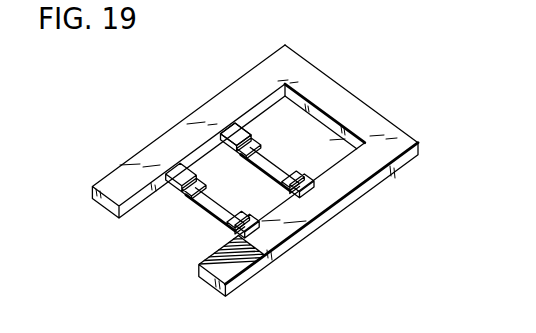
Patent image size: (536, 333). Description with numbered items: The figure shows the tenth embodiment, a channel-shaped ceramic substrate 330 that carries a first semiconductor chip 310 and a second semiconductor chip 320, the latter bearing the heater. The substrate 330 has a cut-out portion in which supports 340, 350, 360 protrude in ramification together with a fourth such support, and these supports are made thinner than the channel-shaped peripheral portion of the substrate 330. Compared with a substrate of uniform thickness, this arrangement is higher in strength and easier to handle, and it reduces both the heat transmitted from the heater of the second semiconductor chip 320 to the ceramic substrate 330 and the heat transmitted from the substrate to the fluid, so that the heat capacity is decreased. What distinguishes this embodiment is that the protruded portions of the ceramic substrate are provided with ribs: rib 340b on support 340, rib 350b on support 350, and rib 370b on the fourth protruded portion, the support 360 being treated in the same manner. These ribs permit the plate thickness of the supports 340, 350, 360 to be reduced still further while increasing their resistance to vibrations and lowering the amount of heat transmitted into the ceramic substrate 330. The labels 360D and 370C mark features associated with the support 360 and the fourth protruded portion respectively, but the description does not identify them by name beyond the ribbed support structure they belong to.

The semiconductor chip 310 is at (203, 216).
The second semiconductor chip 320 is at (290, 142).
The ceramic substrate 330 is at (298, 72).
The support 340 is at (298, 192).
The rib 340b is at (350, 157).
The support 350 is at (228, 147).
The rib 350b is at (240, 118).
The support 360 is at (232, 227).
The hatched pad region 360D is at (268, 257).
The rib 370b is at (175, 165).
The lower left connector clip 370C is at (177, 195).